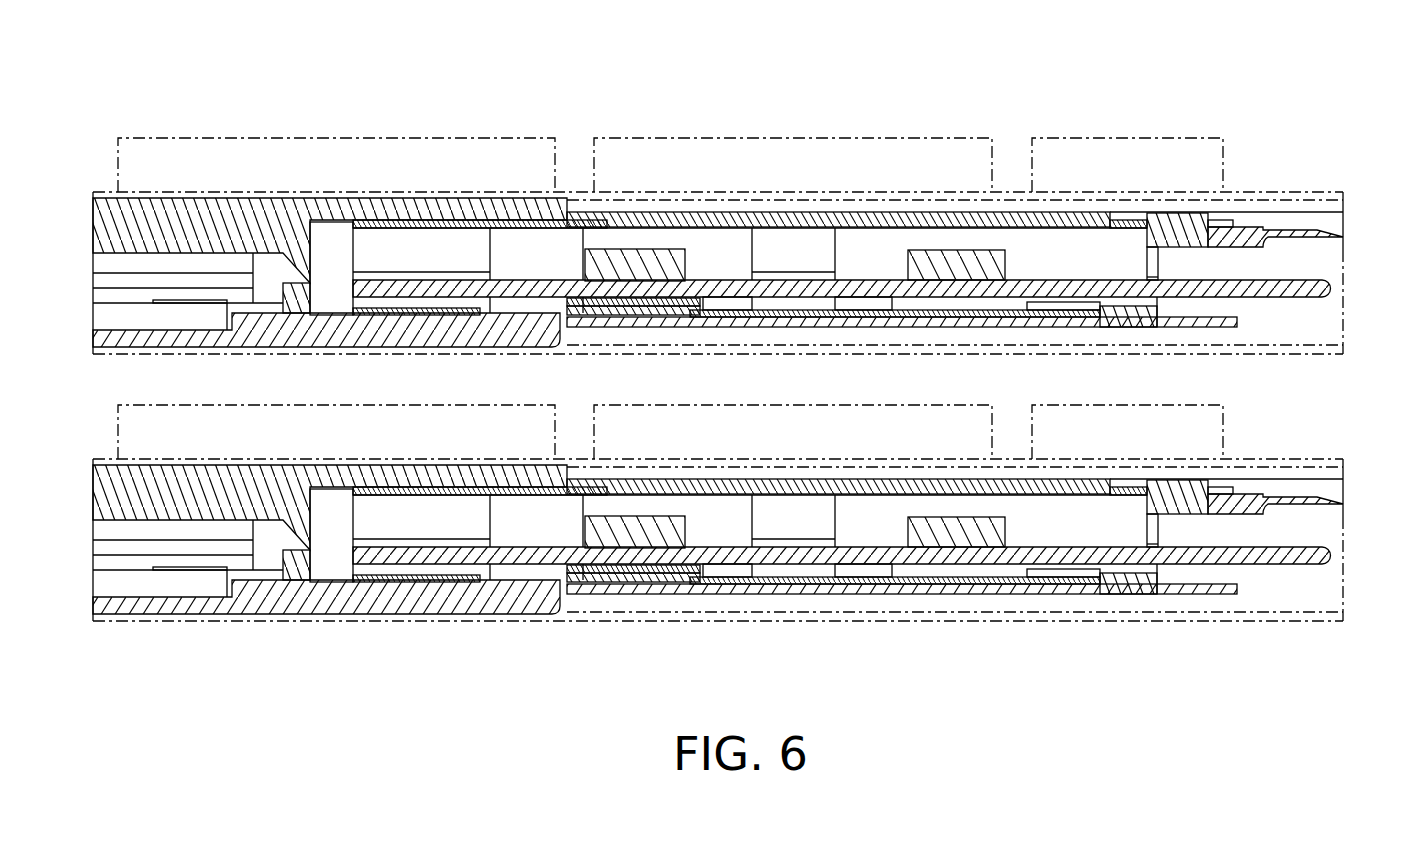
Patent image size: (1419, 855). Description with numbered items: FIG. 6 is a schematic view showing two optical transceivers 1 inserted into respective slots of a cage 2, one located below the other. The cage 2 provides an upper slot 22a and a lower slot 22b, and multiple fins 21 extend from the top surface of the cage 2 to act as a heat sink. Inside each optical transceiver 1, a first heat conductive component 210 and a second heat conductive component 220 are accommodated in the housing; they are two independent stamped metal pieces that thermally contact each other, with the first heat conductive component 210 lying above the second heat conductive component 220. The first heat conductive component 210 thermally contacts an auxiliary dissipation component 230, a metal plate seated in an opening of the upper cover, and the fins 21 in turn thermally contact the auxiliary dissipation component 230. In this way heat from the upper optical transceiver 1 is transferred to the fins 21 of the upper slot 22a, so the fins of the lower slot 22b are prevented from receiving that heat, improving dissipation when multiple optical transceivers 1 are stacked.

The optical transceiver 1 is at (84, 233).
The cage 2 is at (1416, 104).
The upper slot 22a is at (1313, 183).
The lower slot 22b is at (1332, 450).
The fins 21 is at (528, 168).
The first heat conductive component 210 is at (421, 247).
The second heat conductive component 220 is at (462, 314).
The auxiliary dissipation component 230 is at (1112, 213).